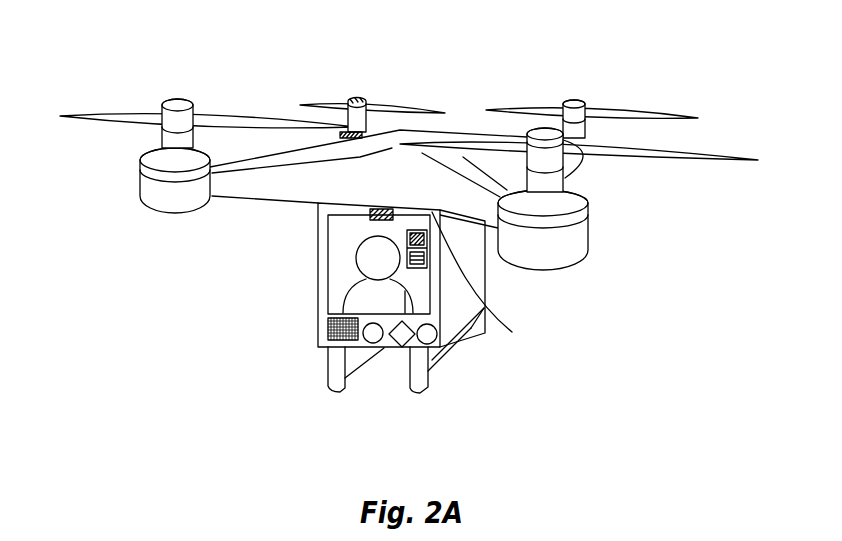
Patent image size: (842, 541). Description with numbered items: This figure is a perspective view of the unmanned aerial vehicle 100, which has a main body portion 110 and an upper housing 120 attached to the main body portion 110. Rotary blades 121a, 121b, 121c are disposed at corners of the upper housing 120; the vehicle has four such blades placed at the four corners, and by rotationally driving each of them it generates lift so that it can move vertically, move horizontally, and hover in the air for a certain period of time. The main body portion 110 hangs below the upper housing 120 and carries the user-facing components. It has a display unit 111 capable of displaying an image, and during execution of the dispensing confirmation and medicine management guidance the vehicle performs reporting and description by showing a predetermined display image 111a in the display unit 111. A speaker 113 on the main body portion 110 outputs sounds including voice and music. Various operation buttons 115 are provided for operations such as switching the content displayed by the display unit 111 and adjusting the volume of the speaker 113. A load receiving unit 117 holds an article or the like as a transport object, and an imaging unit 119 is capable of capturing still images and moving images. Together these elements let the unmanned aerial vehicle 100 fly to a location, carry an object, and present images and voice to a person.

The unmanned aerial vehicle 100 is at (122, 31).
The main body portion 110 is at (318, 231).
The display unit 111 is at (332, 265).
The display image 111a is at (340, 293).
The speaker 113 is at (328, 328).
The operation buttons 115 is at (415, 352).
The load receiving unit 117 is at (418, 392).
The imaging unit 119 is at (489, 277).
The upper housing 120 is at (270, 183).
The rotary blade 121a is at (667, 166).
The rotary blade 121b is at (113, 112).
The rotary blade 121c is at (407, 108).